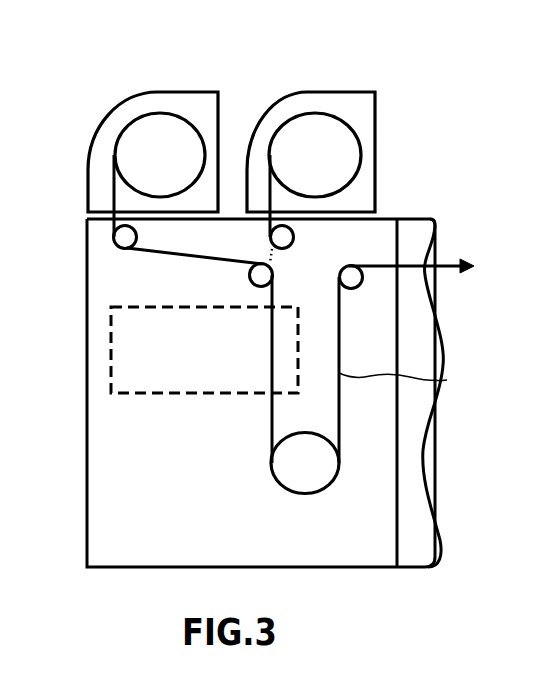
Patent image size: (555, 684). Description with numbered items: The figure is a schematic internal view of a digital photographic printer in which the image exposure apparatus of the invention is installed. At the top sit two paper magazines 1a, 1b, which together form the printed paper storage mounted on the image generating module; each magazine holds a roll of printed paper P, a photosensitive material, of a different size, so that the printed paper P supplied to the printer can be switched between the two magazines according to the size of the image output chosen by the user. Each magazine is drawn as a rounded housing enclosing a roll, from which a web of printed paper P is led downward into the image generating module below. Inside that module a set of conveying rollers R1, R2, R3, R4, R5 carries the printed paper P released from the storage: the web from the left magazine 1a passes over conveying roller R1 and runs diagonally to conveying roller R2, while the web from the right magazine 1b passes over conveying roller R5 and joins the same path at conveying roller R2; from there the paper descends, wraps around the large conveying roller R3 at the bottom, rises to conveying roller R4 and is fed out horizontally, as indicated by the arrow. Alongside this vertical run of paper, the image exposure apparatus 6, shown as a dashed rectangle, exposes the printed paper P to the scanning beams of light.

The paper magazine 1a is at (168, 93).
The paper magazine 1b is at (320, 93).
The conveying roller R1 is at (113, 243).
The conveying roller R2 is at (252, 276).
The conveying roller R3 is at (283, 488).
The conveying roller R4 is at (362, 280).
The conveying roller R5 is at (294, 239).
The printed paper P is at (403, 384).
The image exposure apparatus 6 is at (112, 348).